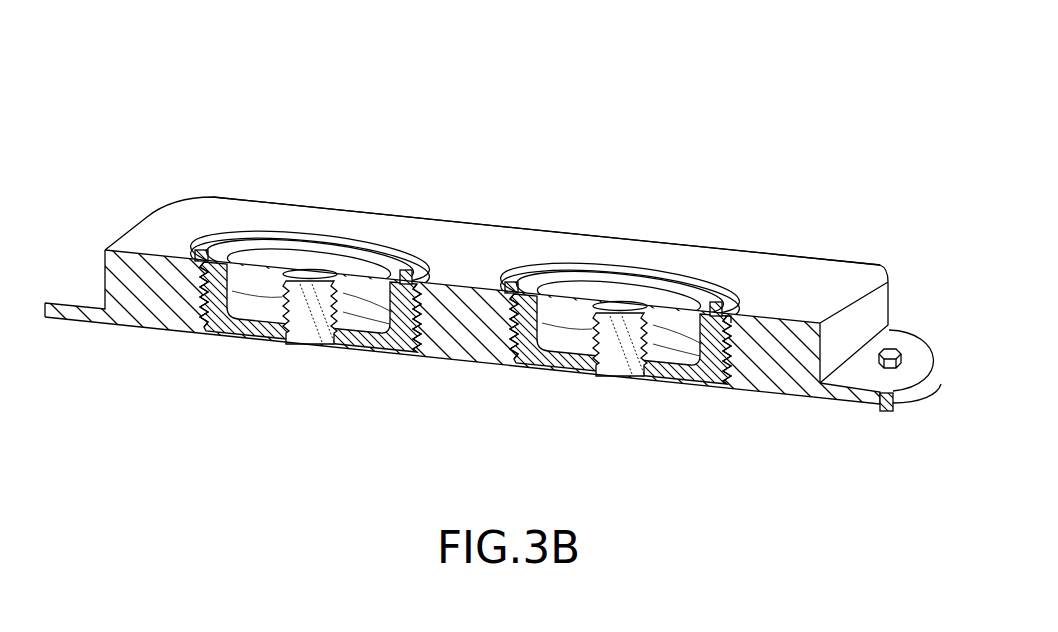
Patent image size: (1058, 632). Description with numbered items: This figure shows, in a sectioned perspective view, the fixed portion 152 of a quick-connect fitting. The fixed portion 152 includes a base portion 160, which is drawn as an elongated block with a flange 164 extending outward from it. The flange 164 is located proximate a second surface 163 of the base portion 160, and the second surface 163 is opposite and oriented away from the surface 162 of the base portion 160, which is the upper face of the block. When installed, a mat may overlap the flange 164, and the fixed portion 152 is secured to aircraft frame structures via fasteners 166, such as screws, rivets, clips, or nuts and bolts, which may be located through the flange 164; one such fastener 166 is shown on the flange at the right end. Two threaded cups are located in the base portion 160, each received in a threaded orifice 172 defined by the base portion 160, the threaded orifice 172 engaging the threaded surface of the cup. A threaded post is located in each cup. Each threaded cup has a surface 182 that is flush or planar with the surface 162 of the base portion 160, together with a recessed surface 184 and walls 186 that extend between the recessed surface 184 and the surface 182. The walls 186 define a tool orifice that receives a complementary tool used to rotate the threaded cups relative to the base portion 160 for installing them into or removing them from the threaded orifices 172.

The fixed portion 152 is at (176, 124).
The base portion 160 is at (492, 256).
The surface 162 is at (794, 304).
The second surface 163 is at (157, 329).
The flange 164 is at (906, 338).
The fasteners 166 is at (897, 366).
The threaded orifice 172 is at (732, 297).
The surface 182 is at (393, 248).
The recessed surface 184 is at (236, 262).
The walls 186 is at (553, 280).